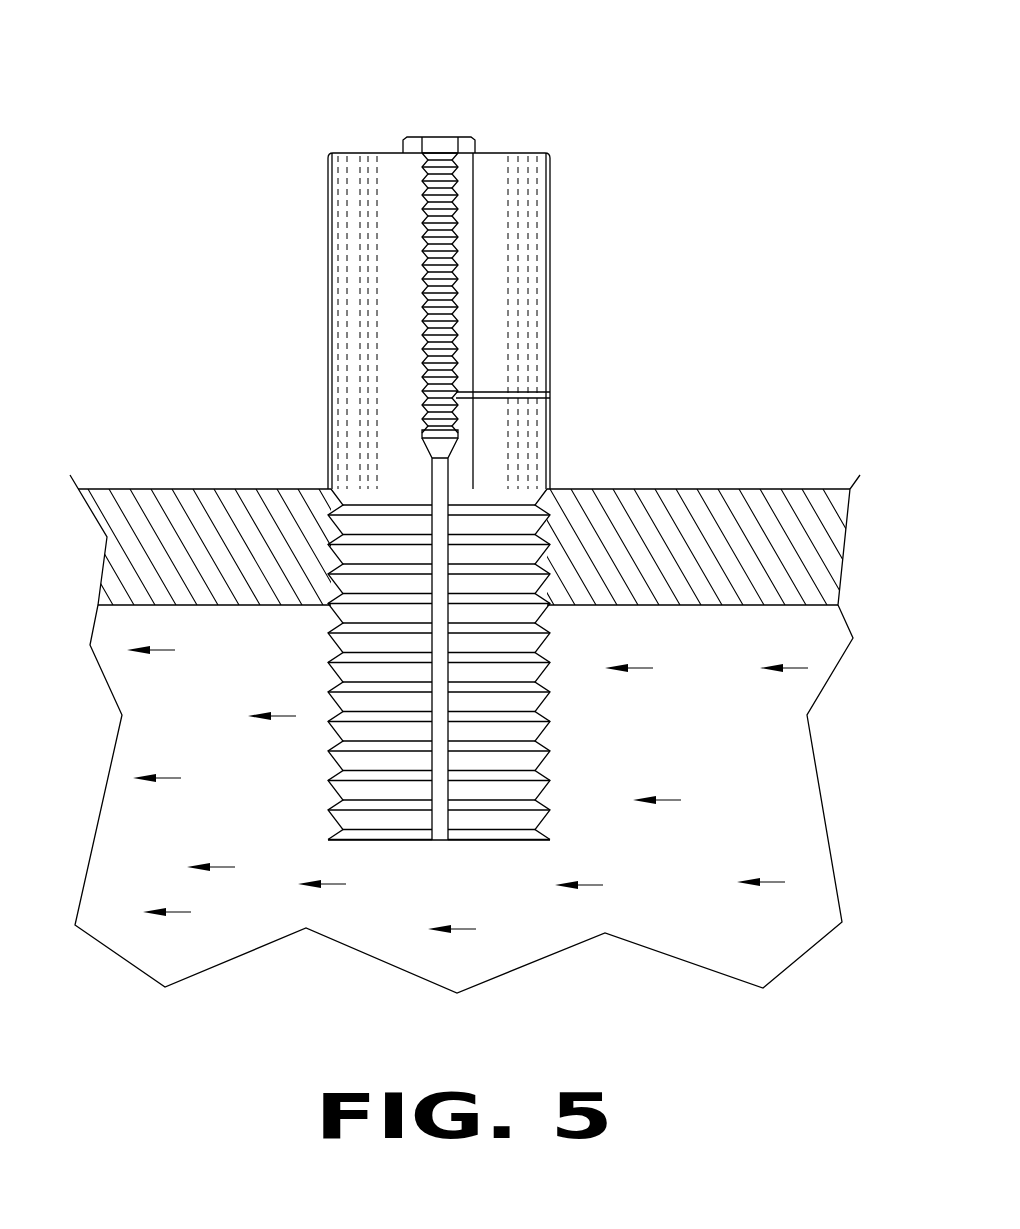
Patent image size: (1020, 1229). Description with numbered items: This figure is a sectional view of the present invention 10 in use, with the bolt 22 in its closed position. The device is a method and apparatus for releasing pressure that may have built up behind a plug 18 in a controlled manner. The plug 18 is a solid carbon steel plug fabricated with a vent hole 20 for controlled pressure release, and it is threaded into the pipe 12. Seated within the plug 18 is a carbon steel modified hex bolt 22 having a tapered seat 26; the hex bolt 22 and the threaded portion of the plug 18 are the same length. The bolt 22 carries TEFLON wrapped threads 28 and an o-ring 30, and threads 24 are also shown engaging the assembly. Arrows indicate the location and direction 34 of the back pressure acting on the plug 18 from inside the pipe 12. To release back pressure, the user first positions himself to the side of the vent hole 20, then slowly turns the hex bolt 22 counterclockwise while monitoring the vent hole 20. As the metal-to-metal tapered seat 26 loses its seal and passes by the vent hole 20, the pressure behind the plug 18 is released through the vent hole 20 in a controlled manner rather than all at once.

The present invention 10 is at (267, 155).
The pipe 12 is at (752, 493).
The plug 18 is at (552, 233).
The vent hole 20 is at (552, 392).
The bolt 22 is at (460, 134).
The threads 24 is at (550, 641).
The tapered seat 26 is at (447, 450).
The threads 28 is at (423, 285).
The "O"-ring 30 is at (420, 432).
The back pressure 34 is at (753, 747).